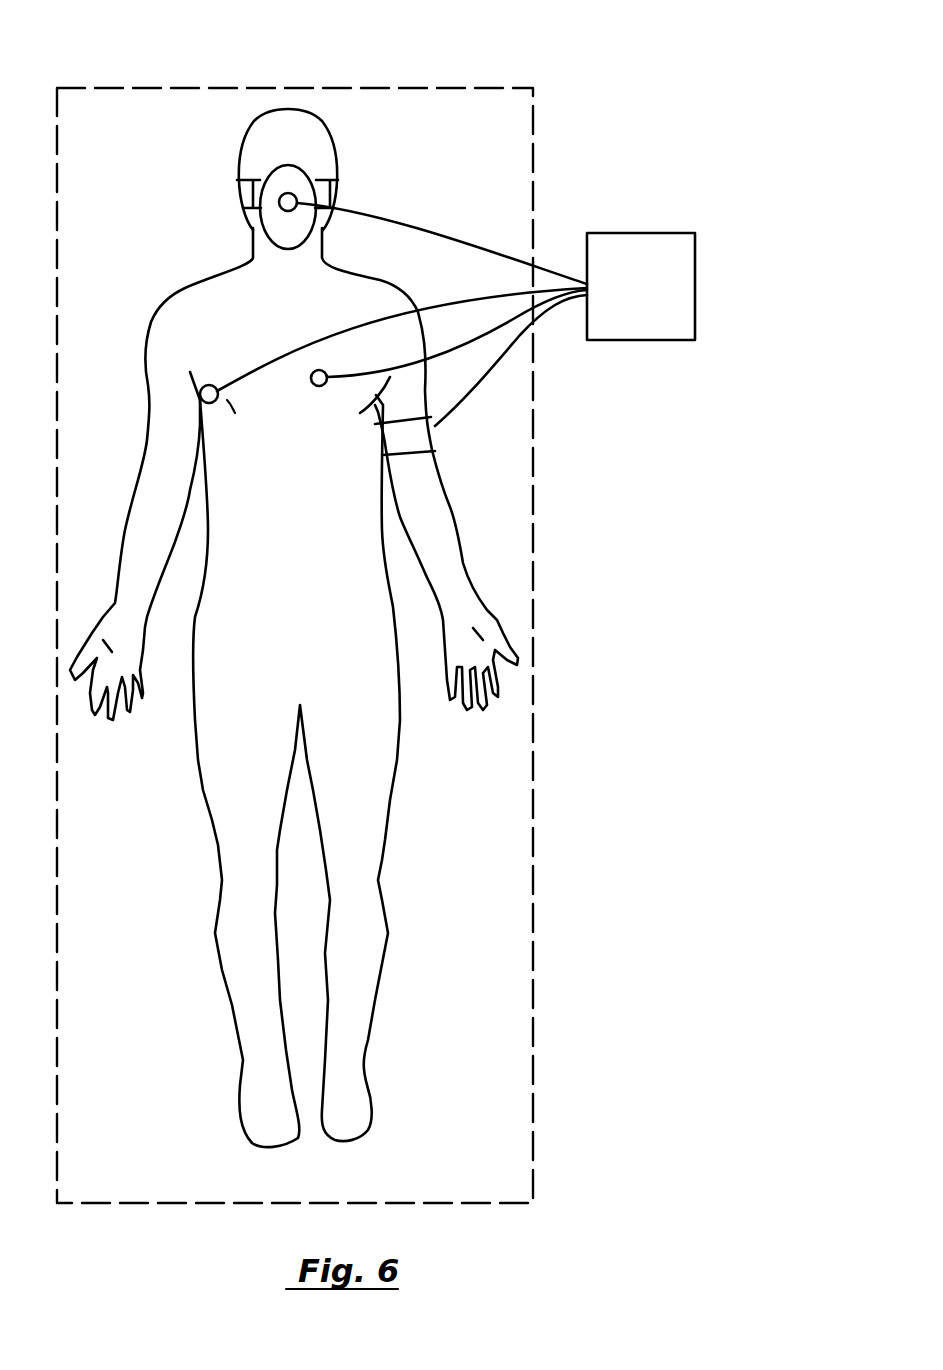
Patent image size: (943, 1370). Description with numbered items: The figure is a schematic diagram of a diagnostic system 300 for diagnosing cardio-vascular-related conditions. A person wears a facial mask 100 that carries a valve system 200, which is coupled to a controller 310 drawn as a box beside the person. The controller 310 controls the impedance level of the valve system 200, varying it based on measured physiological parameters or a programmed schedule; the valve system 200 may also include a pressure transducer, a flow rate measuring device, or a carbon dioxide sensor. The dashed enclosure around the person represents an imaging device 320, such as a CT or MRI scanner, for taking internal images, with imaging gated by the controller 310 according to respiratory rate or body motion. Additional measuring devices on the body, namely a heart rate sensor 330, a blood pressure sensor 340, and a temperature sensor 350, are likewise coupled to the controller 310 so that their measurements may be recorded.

The facial mask 100 is at (300, 178).
The valve system 200 is at (283, 207).
The diagnostic system 300 is at (556, 126).
The controller 310 is at (696, 296).
The imaging device 320 is at (533, 800).
The heart rate sensor 330 is at (321, 386).
The blood pressure sensor 340 is at (435, 437).
The temperature sensor 350 is at (213, 401).